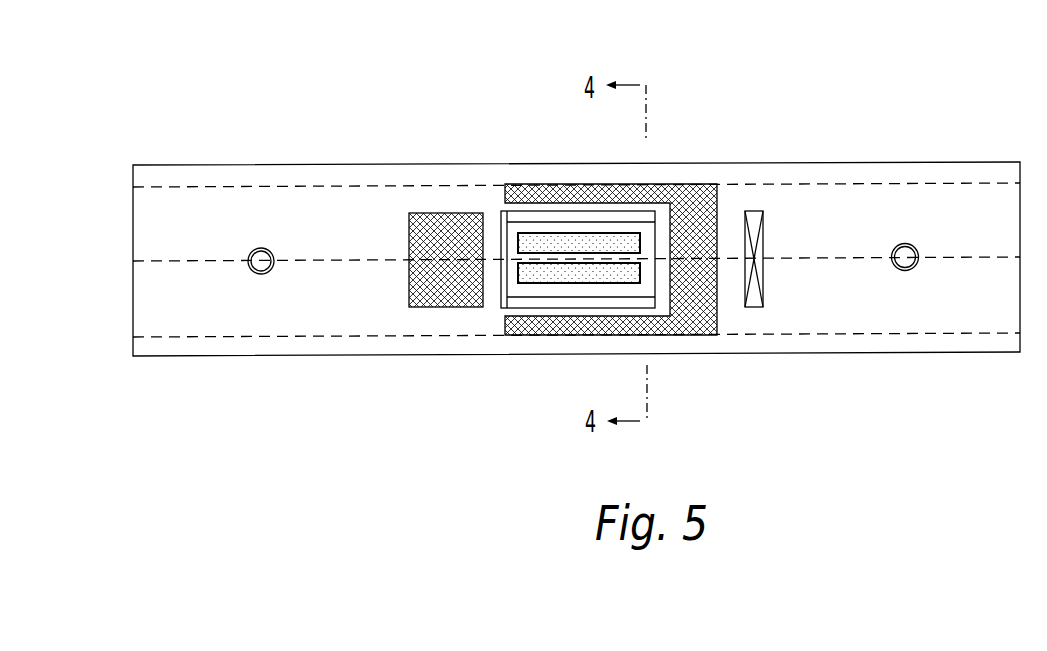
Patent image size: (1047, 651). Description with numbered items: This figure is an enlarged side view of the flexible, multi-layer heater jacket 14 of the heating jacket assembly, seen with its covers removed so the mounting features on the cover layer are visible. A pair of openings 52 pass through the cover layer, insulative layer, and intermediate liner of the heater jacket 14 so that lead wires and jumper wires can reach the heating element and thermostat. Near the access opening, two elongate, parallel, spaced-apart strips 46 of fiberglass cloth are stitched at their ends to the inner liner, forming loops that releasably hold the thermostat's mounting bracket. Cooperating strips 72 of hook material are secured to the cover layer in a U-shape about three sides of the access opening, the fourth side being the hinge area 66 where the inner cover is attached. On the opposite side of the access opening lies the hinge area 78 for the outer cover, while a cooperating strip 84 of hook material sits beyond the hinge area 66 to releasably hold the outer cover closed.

The heater jacket 14 is at (231, 158).
The openings 52 is at (258, 275).
The cooperating strip of hook material 84 is at (432, 213).
The cooperating strips of hook material 72 is at (558, 185).
The hinge area 66 is at (501, 290).
The strips of flexible material 46 is at (530, 233).
The hinge area 78 is at (763, 247).